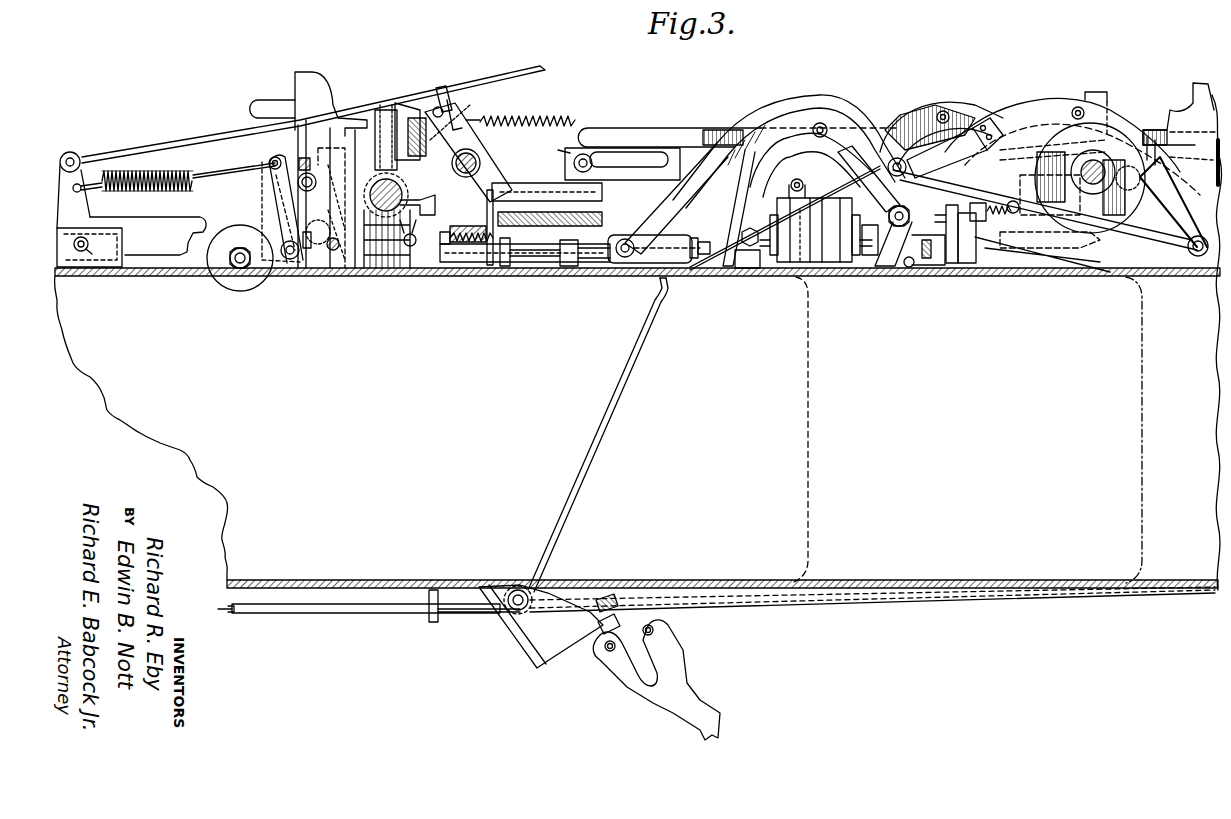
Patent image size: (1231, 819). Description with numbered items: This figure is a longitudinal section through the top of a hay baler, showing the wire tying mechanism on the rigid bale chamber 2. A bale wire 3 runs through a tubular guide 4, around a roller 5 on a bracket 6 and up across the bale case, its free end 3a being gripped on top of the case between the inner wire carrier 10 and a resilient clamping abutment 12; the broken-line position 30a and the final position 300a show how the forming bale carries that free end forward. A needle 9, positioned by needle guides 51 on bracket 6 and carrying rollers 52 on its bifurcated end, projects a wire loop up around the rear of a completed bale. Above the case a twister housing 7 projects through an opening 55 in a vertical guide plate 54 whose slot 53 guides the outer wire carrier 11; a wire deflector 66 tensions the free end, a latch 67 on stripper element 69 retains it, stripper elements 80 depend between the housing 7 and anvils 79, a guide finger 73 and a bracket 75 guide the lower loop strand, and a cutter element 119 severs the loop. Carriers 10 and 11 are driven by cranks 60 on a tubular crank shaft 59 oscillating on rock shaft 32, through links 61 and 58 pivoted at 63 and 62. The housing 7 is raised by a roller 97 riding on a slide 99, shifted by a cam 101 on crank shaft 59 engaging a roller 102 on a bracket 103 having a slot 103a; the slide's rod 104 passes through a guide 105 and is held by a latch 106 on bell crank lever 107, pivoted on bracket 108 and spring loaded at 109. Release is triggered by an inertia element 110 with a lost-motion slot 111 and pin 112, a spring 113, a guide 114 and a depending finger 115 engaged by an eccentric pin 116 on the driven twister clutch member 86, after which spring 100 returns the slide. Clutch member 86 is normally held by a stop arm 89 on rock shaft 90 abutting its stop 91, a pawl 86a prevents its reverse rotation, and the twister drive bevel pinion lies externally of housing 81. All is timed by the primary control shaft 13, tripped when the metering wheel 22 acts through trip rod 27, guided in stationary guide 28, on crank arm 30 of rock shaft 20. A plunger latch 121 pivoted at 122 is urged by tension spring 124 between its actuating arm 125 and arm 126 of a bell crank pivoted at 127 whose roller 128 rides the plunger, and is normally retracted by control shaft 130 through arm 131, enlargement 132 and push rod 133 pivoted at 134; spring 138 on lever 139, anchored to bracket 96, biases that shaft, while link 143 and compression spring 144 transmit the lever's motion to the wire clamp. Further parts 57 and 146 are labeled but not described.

The bale chamber 2 is at (358, 578).
The wire 3 is at (466, 613).
The free end of wire 3a is at (648, 302).
The tubular guide 4 is at (345, 612).
The roller 5 is at (526, 585).
The bracket 6 is at (520, 622).
The twister housing 7 is at (820, 268).
The needle 9 is at (700, 700).
The inner wire carrier 10 is at (912, 205).
The outer wire carrier 11 is at (910, 172).
The clamping abutment 12 is at (925, 250).
The primary control shaft 13 is at (378, 268).
The rock shaft 20 is at (298, 268).
The metering wheel 22 is at (1193, 86).
The trip rod 27 is at (705, 127).
The stationary guide 28 is at (1095, 92).
The crank arm 30 is at (285, 195).
The partition 30a is at (806, 431).
The rock shaft 32 is at (1082, 180).
The needle guides 51 is at (606, 600).
The rollers 52 is at (605, 650).
The slot 53 is at (788, 106).
The guide plate 54 is at (824, 95).
The opening 55 is at (812, 185).
The link 57 is at (962, 135).
The link 58 is at (1032, 100).
The tubular crank shaft 59 is at (1090, 178).
The crank 60 is at (1128, 236).
The link 61 is at (925, 102).
The pivotal connection 62 is at (1188, 254).
The pivotal connection 63 is at (1173, 192).
The wire deflector 66 is at (775, 140).
The latch 67 is at (740, 203).
The stripper element 69 is at (743, 270).
The guide finger 73 is at (745, 186).
The bracket 75 is at (886, 272).
The anvils 79 is at (766, 270).
The wire stripper elements 80 is at (776, 262).
The housing 81 is at (650, 200).
The driven twister clutch member 86 is at (395, 272).
The pawl 86a is at (463, 227).
The stop arm 89 is at (347, 268).
The rock shaft 90 is at (330, 252).
The stop 91 is at (321, 198).
The bracket 96 is at (412, 268).
The roller 97 is at (750, 270).
The slide 99 is at (908, 270).
The spring 100 is at (1000, 200).
The cam 101 is at (1027, 160).
The roller 102 is at (1128, 190).
The bracket 103 is at (1055, 238).
The longitudinal slot 103a is at (1037, 175).
The rod 104 is at (612, 265).
The guide 105 is at (530, 264).
The latch 106 is at (505, 262).
The bell crank lever 107 is at (577, 152).
The bracket 108 is at (580, 268).
The spring 109 is at (535, 185).
The inertia element 110 is at (398, 105).
The slot 111 is at (622, 153).
The pin 112 is at (587, 150).
The spring 113 is at (530, 125).
The guide 114 is at (310, 72).
The depending finger 115 is at (383, 105).
The eccentric pin 116 is at (282, 148).
The cutter element 119 is at (872, 268).
The plunger latch 121 is at (131, 242).
The pivot 122 is at (79, 252).
The tension spring 124 is at (163, 185).
The actuating arm 125 is at (84, 183).
The arm 126 is at (270, 182).
The pivot 127 is at (282, 245).
The roller 128 is at (232, 290).
The control shaft 130 is at (481, 162).
The arm 131 is at (452, 98).
The enlargement 132 is at (440, 86).
The push rod 133 is at (512, 60).
The pivot 134 is at (73, 150).
The spring 138 is at (474, 104).
The lever 139 is at (480, 118).
The link 143 is at (590, 214).
The compression spring 144 is at (470, 262).
The bracket 146 is at (966, 268).
The free end position 300a is at (1140, 415).